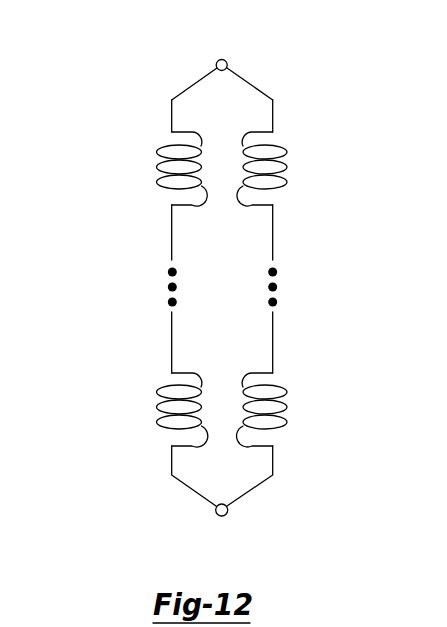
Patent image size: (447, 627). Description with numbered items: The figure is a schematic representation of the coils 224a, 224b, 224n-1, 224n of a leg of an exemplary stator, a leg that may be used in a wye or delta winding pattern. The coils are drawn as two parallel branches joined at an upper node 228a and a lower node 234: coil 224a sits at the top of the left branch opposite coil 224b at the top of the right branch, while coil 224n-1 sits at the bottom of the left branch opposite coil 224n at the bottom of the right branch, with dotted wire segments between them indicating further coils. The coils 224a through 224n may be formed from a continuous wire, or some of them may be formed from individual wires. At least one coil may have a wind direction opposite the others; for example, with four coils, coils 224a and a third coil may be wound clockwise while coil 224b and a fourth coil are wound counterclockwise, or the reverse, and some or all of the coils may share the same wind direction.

The node 228a is at (228, 59).
The coil 224a is at (157, 151).
The coil 224b is at (287, 152).
The coil 224n-1 is at (157, 410).
The coil 224n is at (287, 407).
The node 234 is at (220, 516).